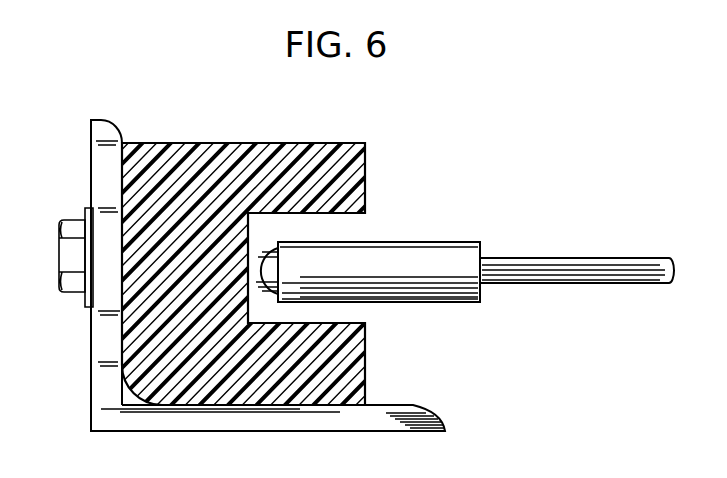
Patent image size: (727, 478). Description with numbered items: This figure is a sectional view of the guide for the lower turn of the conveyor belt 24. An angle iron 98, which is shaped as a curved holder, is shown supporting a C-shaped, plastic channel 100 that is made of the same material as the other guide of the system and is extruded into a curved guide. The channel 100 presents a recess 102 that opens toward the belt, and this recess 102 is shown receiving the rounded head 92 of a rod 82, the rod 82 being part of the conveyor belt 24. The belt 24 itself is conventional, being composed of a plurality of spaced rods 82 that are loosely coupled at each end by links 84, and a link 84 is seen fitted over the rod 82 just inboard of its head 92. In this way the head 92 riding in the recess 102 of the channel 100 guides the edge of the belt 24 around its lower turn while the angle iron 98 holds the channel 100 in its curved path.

The conveyor belt 24 is at (567, 258).
The rod 82 is at (640, 258).
The link 84 is at (432, 292).
The rounded head 92 is at (263, 280).
The angle iron 98 is at (94, 161).
The C-shaped plastic channel 100 is at (350, 142).
The recess 102 is at (356, 226).